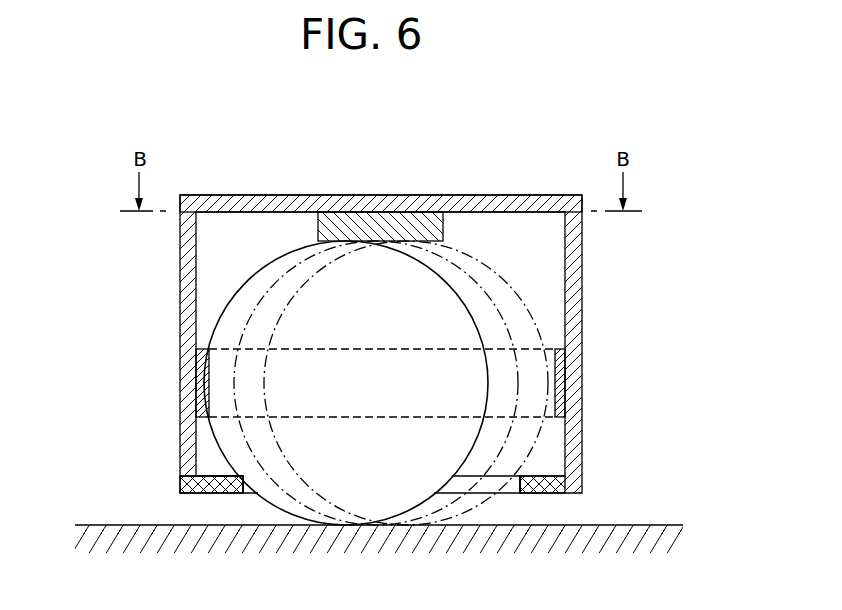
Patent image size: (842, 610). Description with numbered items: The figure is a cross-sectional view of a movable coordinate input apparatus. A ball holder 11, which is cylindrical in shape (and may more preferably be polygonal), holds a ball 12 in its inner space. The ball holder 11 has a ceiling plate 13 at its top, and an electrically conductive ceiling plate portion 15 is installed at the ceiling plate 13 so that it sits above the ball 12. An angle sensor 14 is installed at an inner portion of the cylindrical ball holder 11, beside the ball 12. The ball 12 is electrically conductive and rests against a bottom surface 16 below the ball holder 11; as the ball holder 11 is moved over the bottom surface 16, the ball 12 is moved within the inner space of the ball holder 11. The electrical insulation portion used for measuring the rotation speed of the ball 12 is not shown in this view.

The ball holder 11 is at (582, 290).
The ball 12 is at (237, 292).
The ceiling plate 13 is at (500, 200).
The angle sensor 14 is at (560, 378).
The ceiling plate portion 15 is at (380, 222).
The bottom surface 16 is at (633, 525).